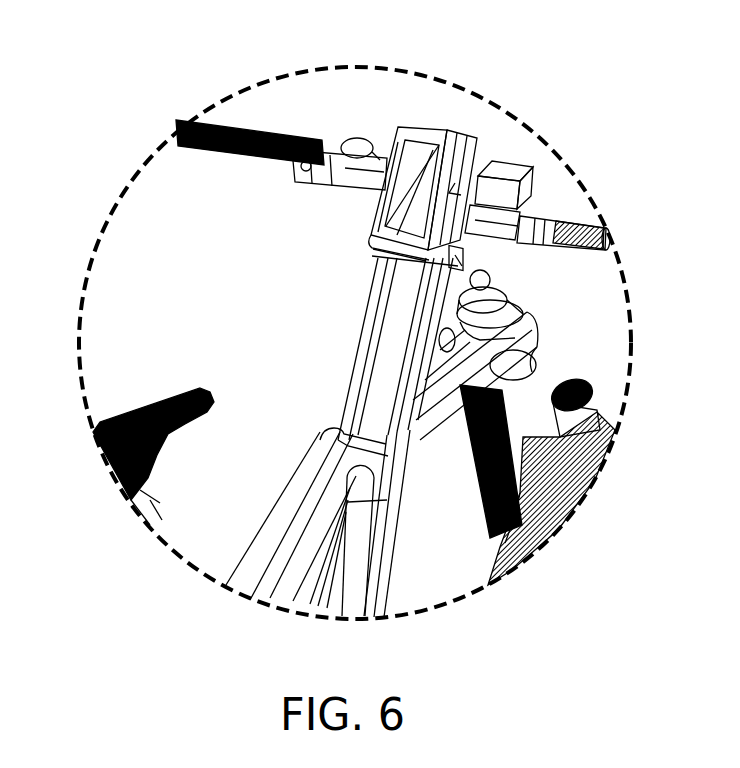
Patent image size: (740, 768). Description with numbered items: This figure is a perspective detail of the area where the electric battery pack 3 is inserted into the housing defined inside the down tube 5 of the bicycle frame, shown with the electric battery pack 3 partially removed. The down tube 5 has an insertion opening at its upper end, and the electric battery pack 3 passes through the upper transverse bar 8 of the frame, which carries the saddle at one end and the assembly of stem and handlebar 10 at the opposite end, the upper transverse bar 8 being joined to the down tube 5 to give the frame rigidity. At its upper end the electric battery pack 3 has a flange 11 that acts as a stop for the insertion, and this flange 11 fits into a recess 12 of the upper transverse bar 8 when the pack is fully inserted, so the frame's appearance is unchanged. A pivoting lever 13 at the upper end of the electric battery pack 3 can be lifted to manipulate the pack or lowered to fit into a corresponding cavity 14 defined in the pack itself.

The electric battery pack 3 is at (348, 312).
The down tube 5 is at (375, 560).
The upper transverse bar 8 is at (272, 538).
The assembly of stem and handlebar 10 is at (565, 230).
The flange 11 is at (490, 163).
The recess 12 is at (340, 425).
The lever 13 is at (412, 120).
The cavity 14 is at (455, 192).